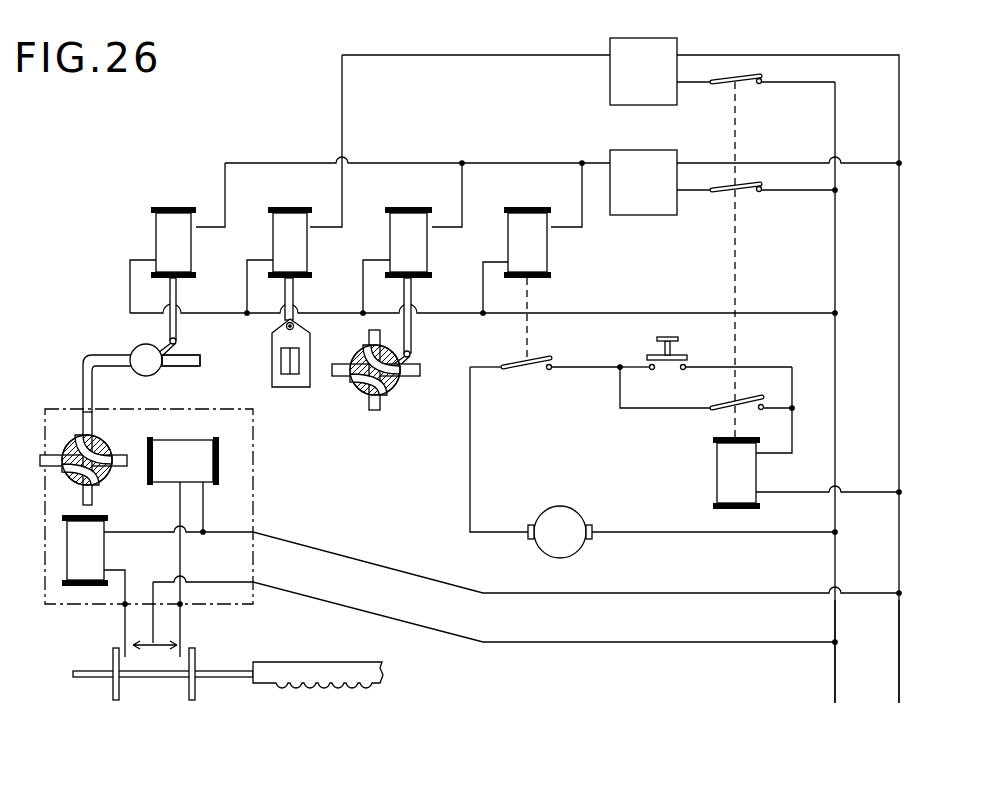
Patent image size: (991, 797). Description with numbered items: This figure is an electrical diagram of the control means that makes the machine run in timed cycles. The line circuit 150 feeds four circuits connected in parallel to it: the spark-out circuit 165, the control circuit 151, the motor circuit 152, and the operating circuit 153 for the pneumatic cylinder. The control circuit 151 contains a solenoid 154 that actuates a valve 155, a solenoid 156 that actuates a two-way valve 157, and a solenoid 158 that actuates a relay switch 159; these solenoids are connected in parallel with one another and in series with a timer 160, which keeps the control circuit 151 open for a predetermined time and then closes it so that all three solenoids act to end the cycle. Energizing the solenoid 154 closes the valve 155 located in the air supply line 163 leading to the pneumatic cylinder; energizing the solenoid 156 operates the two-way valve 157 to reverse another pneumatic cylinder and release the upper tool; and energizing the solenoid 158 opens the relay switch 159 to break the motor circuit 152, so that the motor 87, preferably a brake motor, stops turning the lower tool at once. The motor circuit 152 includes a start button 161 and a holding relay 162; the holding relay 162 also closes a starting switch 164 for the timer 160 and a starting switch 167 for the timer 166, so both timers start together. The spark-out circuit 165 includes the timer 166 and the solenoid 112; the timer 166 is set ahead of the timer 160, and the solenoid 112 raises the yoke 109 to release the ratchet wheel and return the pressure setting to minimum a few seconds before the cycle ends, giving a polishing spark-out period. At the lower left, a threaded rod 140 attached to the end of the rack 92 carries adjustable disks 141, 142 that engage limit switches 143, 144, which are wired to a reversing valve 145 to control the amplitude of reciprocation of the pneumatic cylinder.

The motor 87 is at (562, 510).
The rack 92 is at (360, 688).
The yoke 109 is at (296, 388).
The solenoid 112 is at (300, 255).
The threaded rod 140 is at (95, 657).
The disk 141 is at (193, 700).
The disk 142 is at (117, 700).
The limit switch 143 is at (180, 632).
The limit switch 144 is at (125, 626).
The reversing valve 145 is at (258, 495).
The line circuit 150 is at (870, 672).
The control circuit 151 is at (852, 42).
The motor circuit 152 is at (740, 515).
The operating circuit 153 is at (765, 621).
The solenoid 154 is at (160, 238).
The valve 155 is at (135, 350).
The solenoid 156 is at (427, 250).
The two-way valve 157 is at (393, 394).
The solenoid 158 is at (551, 260).
The relay switch 159 is at (510, 364).
The timer 160 is at (614, 150).
The start button 161 is at (645, 356).
The holding relay 162 is at (717, 473).
The air supply line 163 is at (195, 368).
The starting switch 164 is at (725, 195).
The spark-out circuit 165 is at (505, 45).
The timer 166 is at (664, 31).
The starting switch 167 is at (738, 72).